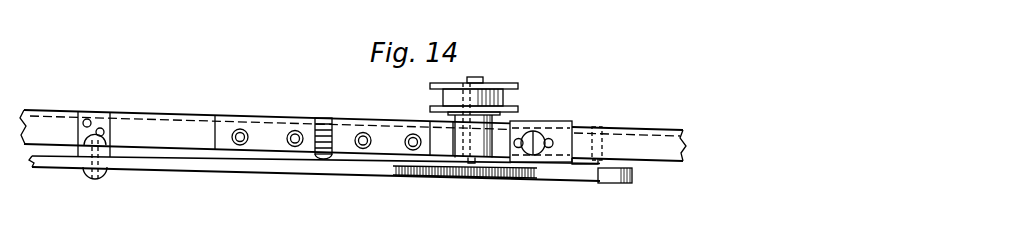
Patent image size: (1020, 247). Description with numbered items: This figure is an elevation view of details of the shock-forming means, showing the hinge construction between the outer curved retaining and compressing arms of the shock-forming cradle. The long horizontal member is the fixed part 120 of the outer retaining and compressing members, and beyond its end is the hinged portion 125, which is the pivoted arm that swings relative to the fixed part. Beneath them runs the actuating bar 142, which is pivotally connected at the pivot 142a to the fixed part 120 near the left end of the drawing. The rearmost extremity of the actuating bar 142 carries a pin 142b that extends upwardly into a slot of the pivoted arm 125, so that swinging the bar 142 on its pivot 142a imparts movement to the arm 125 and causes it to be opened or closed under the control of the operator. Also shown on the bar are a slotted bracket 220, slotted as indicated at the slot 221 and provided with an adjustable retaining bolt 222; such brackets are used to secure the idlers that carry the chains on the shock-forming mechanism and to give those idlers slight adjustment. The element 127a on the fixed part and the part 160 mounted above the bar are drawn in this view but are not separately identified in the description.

The fixed part 120 is at (160, 125).
The hinged portion 125 is at (633, 136).
The clamp 127a is at (322, 118).
The actuating bar 142 is at (198, 165).
The pivot 142a is at (99, 172).
The pin 142b is at (635, 165).
The pulley 160 is at (499, 84).
The slotted bracket 220 is at (557, 160).
The slot 221 is at (560, 148).
The adjustable retaining bolt 222 is at (530, 169).